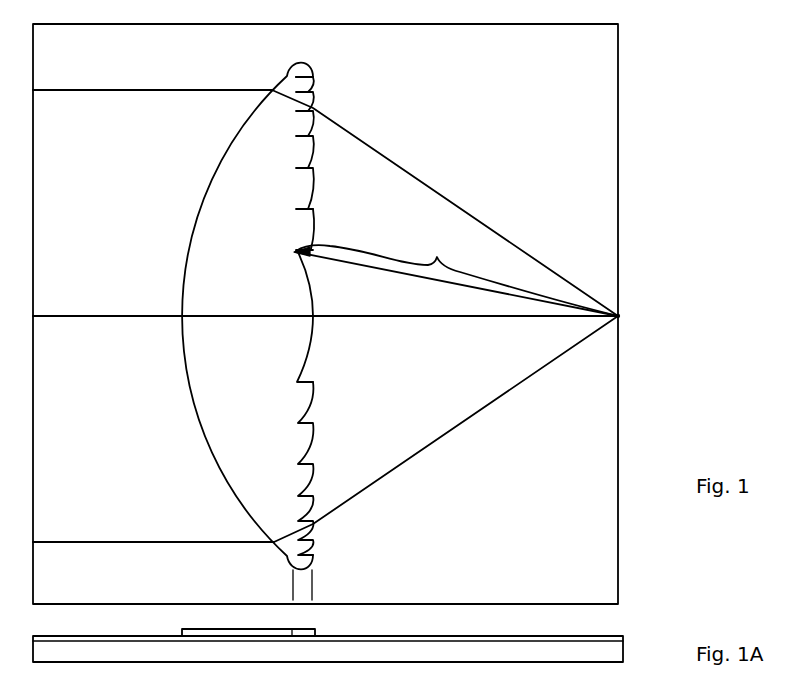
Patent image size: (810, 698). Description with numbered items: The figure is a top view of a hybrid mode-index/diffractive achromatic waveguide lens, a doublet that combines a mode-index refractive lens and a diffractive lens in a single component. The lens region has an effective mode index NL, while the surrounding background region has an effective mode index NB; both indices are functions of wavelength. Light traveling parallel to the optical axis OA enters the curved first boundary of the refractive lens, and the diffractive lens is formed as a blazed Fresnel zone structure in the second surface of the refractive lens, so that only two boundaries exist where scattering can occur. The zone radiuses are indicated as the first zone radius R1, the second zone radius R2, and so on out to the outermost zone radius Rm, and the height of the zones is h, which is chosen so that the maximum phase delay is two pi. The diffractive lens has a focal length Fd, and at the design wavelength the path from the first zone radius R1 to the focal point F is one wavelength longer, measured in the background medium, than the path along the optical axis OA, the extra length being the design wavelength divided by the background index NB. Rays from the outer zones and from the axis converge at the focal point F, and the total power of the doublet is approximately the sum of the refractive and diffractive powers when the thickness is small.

The optical axis OA is at (104, 317).
The background effective index of refraction NB is at (153, 295).
The lens effective mode index NL is at (248, 316).
The first zone radius R1 is at (285, 309).
The second zone radius R2 is at (285, 220).
The outermost zone radius Rm is at (281, 61).
The diffractive focal length Fd is at (463, 223).
The focal point F is at (628, 316).
The zone height h is at (243, 583).